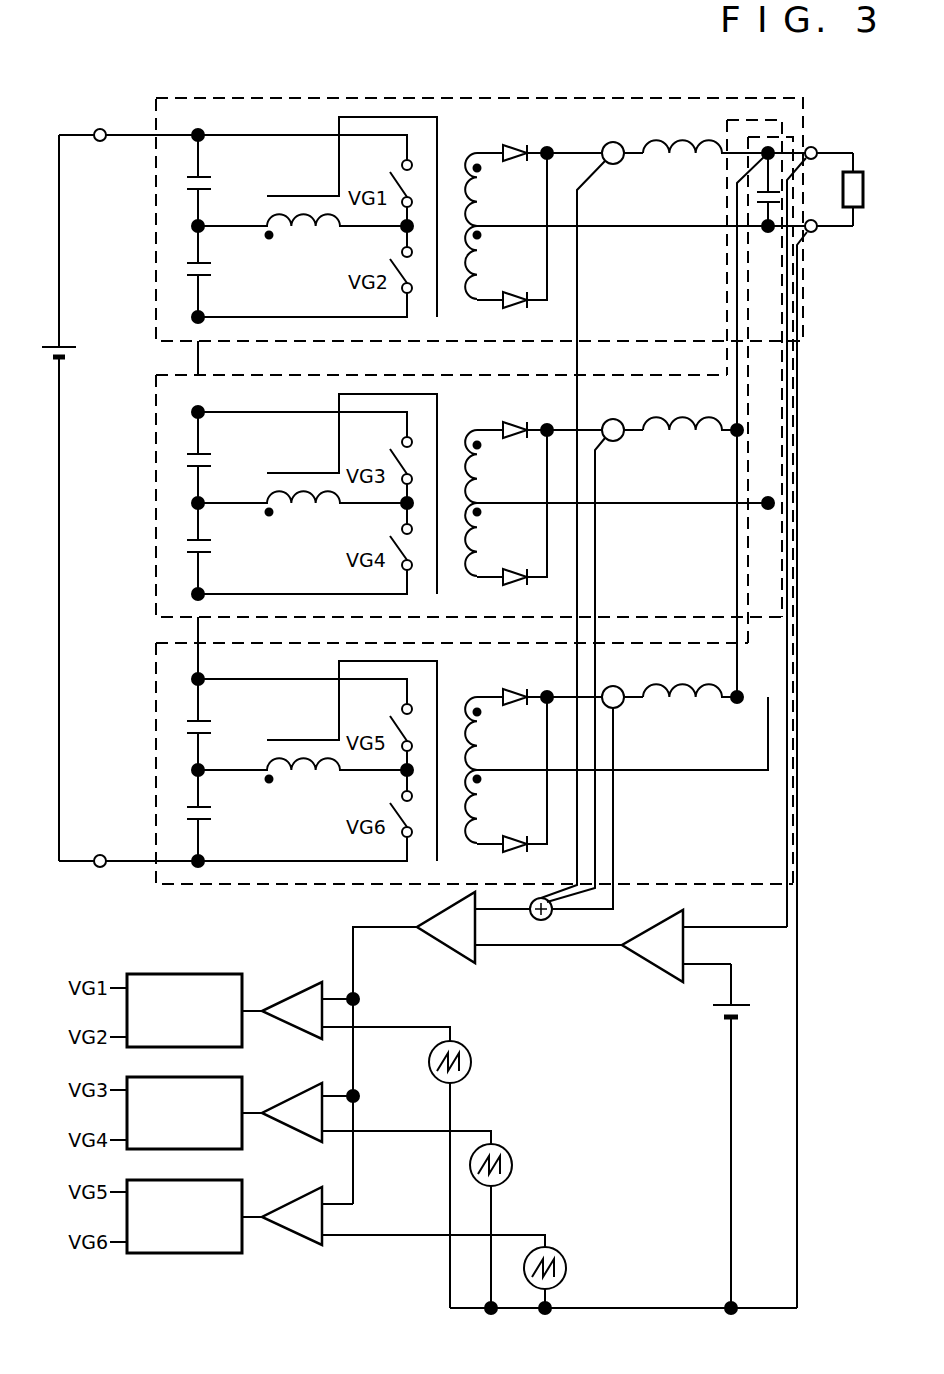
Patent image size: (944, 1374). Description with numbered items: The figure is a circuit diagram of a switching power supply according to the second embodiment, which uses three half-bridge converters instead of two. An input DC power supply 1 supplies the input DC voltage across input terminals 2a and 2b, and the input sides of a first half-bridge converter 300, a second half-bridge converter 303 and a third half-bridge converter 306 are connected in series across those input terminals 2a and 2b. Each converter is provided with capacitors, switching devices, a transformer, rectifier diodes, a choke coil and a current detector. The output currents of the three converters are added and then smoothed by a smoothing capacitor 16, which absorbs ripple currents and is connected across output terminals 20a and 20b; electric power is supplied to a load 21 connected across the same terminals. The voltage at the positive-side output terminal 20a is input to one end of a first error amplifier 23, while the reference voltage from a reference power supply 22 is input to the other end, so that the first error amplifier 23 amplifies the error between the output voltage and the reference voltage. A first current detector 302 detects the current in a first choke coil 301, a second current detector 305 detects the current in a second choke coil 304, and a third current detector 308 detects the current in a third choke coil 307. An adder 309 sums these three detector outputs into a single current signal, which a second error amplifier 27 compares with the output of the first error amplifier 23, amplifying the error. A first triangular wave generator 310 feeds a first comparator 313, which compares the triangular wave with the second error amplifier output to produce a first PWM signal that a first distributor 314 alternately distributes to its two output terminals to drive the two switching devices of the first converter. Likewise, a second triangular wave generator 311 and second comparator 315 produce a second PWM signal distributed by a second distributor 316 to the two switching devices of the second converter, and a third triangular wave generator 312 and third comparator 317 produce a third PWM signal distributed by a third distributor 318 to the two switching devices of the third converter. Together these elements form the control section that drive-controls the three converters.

The input DC power supply 1 is at (55, 345).
The input terminal 2a is at (95, 130).
The input terminal 2b is at (95, 867).
The smoothing capacitor 16 is at (772, 191).
The output terminal 20a is at (816, 148).
The output terminal 20b is at (815, 233).
The load 21 is at (858, 212).
The reference power supply 22 is at (727, 1022).
The first error amplifier 23 is at (658, 975).
The second error amplifier 27 is at (448, 958).
The first half-bridge converter 300 is at (178, 97).
The first choke coil 301 is at (720, 123).
The first current detector 302 is at (621, 161).
The second half-bridge converter 303 is at (163, 374).
The second choke coil 304 is at (718, 402).
The second current detector 305 is at (621, 438).
The third half-bridge converter 306 is at (163, 642).
The third choke coil 307 is at (720, 667).
The third current detector 308 is at (621, 705).
The adder 309 is at (551, 917).
The first triangular wave generator 310 is at (471, 1057).
The second triangular wave generator 311 is at (512, 1160).
The third triangular wave generator 312 is at (566, 1262).
The first comparator 313 is at (292, 984).
The first distributor 314 is at (182, 975).
The second comparator 315 is at (298, 1086).
The second distributor 316 is at (186, 1078).
The third comparator 317 is at (296, 1190).
The third distributor 318 is at (194, 1181).